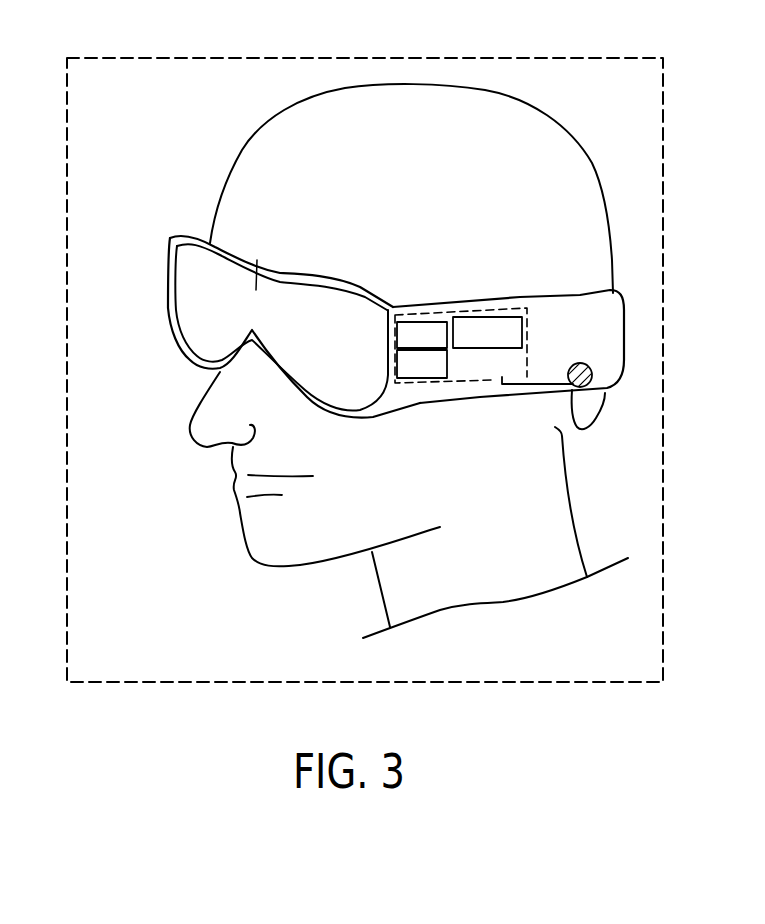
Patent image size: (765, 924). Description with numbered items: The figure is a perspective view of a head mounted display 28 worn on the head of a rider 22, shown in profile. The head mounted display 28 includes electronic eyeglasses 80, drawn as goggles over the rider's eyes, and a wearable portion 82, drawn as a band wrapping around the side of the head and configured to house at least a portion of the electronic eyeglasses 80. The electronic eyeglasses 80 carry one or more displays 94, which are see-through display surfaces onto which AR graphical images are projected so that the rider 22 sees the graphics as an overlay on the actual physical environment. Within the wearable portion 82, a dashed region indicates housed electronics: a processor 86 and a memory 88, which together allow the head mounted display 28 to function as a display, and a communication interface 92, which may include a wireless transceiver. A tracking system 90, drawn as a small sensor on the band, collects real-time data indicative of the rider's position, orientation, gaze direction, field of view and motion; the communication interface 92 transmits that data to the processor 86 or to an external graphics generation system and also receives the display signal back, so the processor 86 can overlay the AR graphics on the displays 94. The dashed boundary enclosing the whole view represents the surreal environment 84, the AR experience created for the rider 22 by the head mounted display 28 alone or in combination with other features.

The rider 22 is at (592, 163).
The head mounted display 28 is at (279, 288).
The electronic eyeglasses 80 is at (386, 304).
The wearable portion 82 is at (514, 336).
The surreal environment 84 is at (404, 58).
The processor 86 is at (420, 320).
The memory 88 is at (447, 360).
The tracking system 90 is at (583, 430).
The communication interface 92 is at (487, 318).
The displays 94 is at (223, 297).